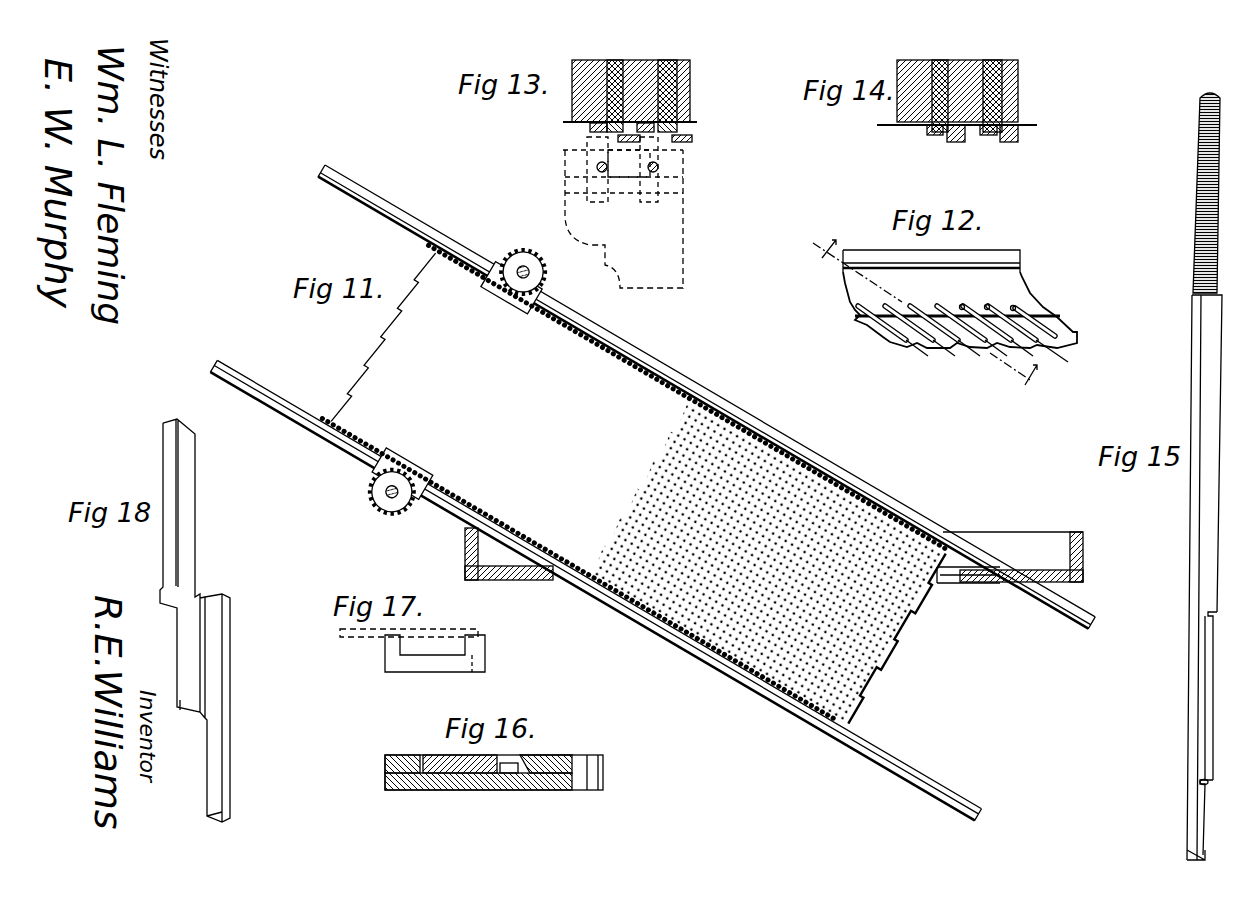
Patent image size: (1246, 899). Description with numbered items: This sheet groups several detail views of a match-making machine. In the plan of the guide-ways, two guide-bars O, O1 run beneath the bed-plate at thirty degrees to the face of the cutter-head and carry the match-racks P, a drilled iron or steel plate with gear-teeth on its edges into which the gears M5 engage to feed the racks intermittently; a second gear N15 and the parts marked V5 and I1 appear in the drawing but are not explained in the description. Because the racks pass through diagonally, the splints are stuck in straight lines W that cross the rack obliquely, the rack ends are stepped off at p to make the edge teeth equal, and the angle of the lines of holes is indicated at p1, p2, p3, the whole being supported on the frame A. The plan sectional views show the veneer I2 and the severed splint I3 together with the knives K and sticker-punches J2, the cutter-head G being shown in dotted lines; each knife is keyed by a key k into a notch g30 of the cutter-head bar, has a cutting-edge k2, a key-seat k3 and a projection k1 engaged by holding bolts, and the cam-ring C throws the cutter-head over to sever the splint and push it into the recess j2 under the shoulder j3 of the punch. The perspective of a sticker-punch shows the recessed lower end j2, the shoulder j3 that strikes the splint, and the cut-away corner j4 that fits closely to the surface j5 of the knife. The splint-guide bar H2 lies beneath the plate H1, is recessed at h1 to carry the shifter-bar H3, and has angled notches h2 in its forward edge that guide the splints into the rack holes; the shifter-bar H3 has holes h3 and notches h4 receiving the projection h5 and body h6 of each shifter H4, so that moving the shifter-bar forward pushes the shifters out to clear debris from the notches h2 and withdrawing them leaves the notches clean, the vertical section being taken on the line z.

In FIG. 11, the guide-bar O is at (374, 208).
In FIG. 11, the guide-bar O1 is at (266, 397).
In FIG. 11, the gear M5 is at (520, 252).
In FIG. 11, the pinion gear N15 is at (370, 502).
In FIG. 11, the match-rack P is at (866, 440).
In FIG. 11, the stepped-off end p is at (372, 326).
In FIG. 11, the line of holes p1 is at (882, 512).
In FIG. 11, the line of holes p2 is at (807, 703).
In FIG. 11, the line of holes p3 is at (593, 573).
In FIG. 11, the frame A is at (500, 580).
In FIG. 11, the straight line of splints W is at (585, 565).
In FIG. 11, the bar V5 is at (960, 572).
In FIG. 13, the hatched block I1 is at (630, 75).
In FIG. 14, the hatched block I1 is at (950, 75).
In FIG. 13, the veneer I2 is at (655, 70).
In FIG. 14, the veneer I2 is at (982, 72).
In FIG. 14, the severed splint I3 is at (960, 138).
In FIG. 13, the sticker-punch J2 is at (690, 125).
In FIG. 14, the sticker-punch J2 is at (965, 150).
In FIG. 15, the sticker-punch J2 is at (1192, 398).
In FIG. 15, the recess j2 is at (1207, 834).
In FIG. 15, the shoulder j3 is at (1200, 782).
In FIG. 15, the cut-away corner j4 is at (1207, 688).
In FIG. 13, the knife surface j5 is at (600, 135).
In FIG. 14, the knife surface j5 is at (945, 140).
In FIG. 18, the knife surface j5 is at (218, 768).
In FIG. 13, the knife K is at (600, 128).
In FIG. 14, the knife K is at (935, 132).
In FIG. 18, the knife K is at (195, 620).
In FIG. 13, the key k is at (622, 169).
In FIG. 13, the projection k1 is at (612, 202).
In FIG. 18, the projection k1 is at (178, 470).
In FIG. 14, the cutting-edge k2 is at (1015, 120).
In FIG. 18, the cutting-edge k2 is at (232, 745).
In FIG. 13, the key-seat k3 is at (595, 170).
In FIG. 18, the key-seat k3 is at (192, 606).
In FIG. 13, the cam-ring C is at (540, 175).
In FIG. 13, the cutter-head G is at (683, 215).
In FIG. 13, the notch g30 is at (655, 157).
In FIG. 17, the plate H1 is at (355, 632).
In FIG. 12, the splint-guide bar H2 is at (1020, 256).
In FIG. 17, the splint-guide bar H2 is at (408, 665).
In FIG. 16, the splint-guide bar H2 is at (385, 772).
In FIG. 12, the shifter-bar H3 is at (957, 295).
In FIG. 16, the shifter-bar H3 is at (445, 758).
In FIG. 12, the shifter H4 is at (886, 333).
In FIG. 16, the shifter H4 is at (520, 760).
In FIG. 17, the recess h1 is at (430, 645).
In FIG. 12, the notch h2 is at (950, 350).
In FIG. 12, the hole h3 is at (968, 302).
In FIG. 12, the notch h4 is at (1010, 310).
In FIG. 16, the projection h5 is at (500, 773).
In FIG. 12, the shifter body h6 is at (928, 305).
In FIG. 16, the shifter body h6 is at (508, 763).
In FIG. 12, the section line z is at (920, 314).